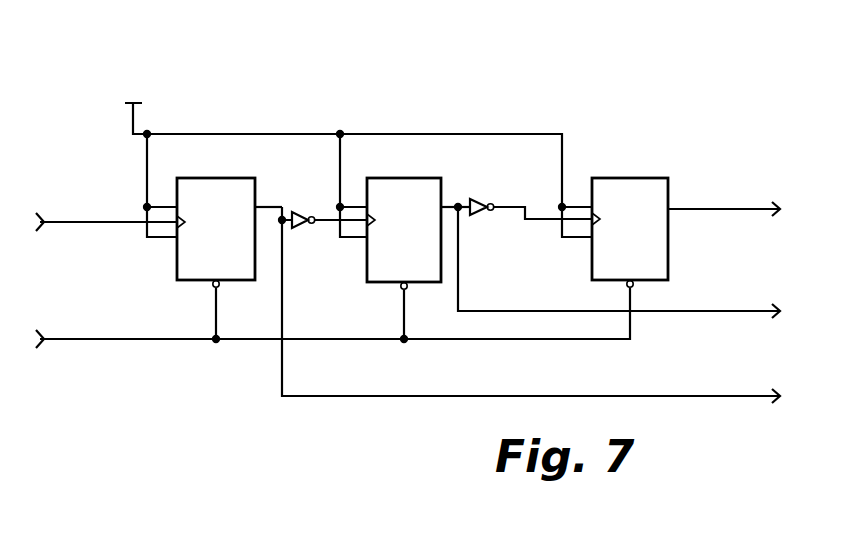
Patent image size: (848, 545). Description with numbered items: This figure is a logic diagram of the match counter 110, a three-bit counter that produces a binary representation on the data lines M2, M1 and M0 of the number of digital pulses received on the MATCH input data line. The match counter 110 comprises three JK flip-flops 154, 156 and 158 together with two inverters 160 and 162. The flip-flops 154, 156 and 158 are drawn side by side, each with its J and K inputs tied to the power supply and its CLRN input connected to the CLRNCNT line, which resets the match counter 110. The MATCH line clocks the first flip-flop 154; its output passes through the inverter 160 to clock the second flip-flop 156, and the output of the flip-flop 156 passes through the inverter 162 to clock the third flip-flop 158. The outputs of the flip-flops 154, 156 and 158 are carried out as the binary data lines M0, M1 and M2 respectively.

The match counter 110 is at (288, 89).
The JK flip-flop 154 is at (244, 183).
The JK flip-flop 156 is at (443, 178).
The JK flip-flop 158 is at (663, 183).
The inverter 160 is at (302, 230).
The inverter 162 is at (481, 199).